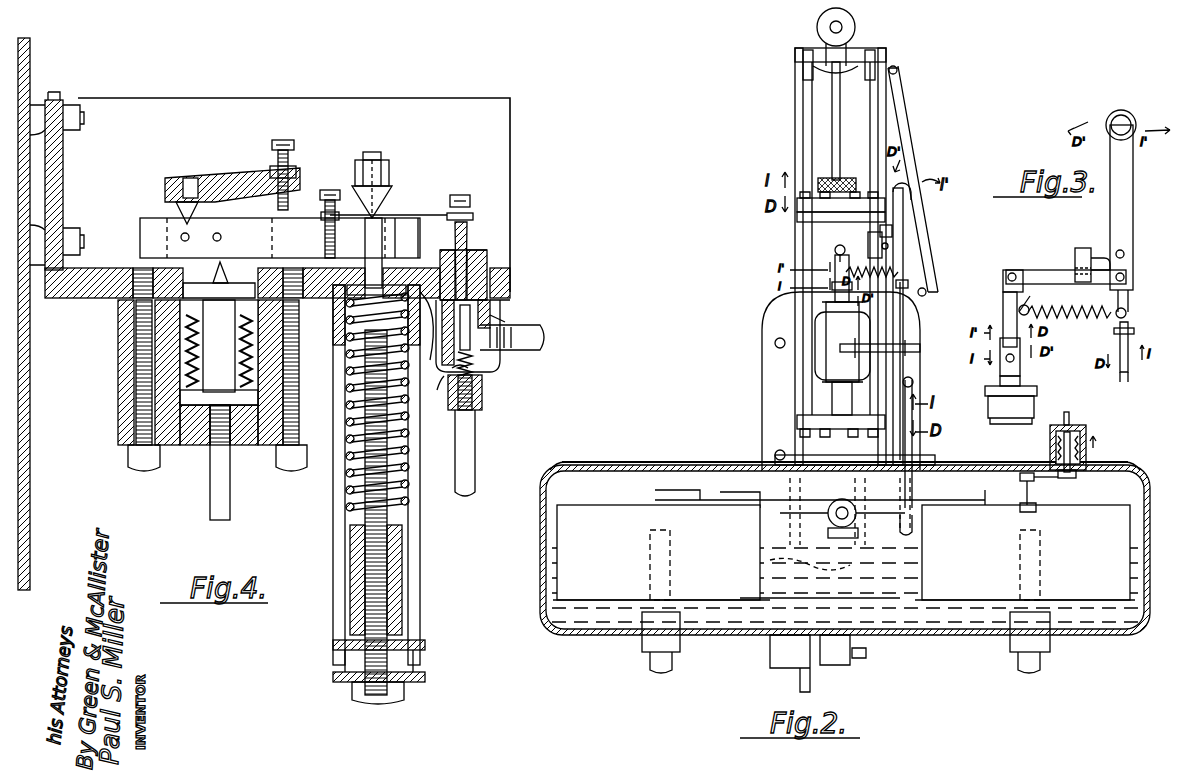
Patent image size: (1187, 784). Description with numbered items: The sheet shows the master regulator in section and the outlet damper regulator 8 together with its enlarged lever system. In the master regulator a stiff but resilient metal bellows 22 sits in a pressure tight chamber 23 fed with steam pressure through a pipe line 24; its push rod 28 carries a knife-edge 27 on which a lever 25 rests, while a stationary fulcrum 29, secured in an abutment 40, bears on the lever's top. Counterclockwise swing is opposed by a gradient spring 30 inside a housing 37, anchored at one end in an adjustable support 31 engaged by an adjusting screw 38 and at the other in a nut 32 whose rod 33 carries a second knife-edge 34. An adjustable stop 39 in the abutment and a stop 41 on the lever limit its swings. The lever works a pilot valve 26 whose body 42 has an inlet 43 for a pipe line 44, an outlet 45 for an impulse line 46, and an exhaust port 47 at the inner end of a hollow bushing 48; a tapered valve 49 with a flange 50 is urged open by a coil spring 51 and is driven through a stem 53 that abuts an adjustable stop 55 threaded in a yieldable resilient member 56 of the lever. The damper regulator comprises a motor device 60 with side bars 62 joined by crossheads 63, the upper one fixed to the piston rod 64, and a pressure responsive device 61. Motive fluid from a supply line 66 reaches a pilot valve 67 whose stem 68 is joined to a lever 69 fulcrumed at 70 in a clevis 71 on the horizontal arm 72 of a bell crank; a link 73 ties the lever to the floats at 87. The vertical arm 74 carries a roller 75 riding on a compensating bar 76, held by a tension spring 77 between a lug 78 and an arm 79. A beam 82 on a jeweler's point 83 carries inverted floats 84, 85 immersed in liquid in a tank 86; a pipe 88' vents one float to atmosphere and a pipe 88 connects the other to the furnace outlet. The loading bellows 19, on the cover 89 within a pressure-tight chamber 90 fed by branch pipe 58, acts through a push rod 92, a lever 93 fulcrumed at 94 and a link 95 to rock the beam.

In FIG. 2, the outlet damper regulator 8 is at (690, 331).
In FIG. 2, the loading bellows 19 is at (1087, 452).
In FIG. 4, the metal bellows 22 is at (190, 340).
In FIG. 4, the pressure tight chamber 23 is at (186, 362).
In FIG. 4, the pipe line 24 is at (225, 492).
In FIG. 4, the lever 25 is at (280, 238).
In FIG. 4, the pilot valve 26 is at (580, 367).
In FIG. 4, the knife-edge 27 is at (215, 265).
In FIG. 4, the push rod 28 is at (228, 352).
In FIG. 4, the stationary fulcrum 29 is at (180, 212).
In FIG. 4, the gradient spring 30 is at (403, 514).
In FIG. 4, the adjustable support 31 is at (355, 575).
In FIG. 4, the nut 32 is at (440, 345).
In FIG. 4, the rod 33 is at (383, 212).
In FIG. 4, the knife-edge 34 is at (380, 198).
In FIG. 4, the housing 37 is at (418, 546).
In FIG. 4, the adjusting screw 38 is at (368, 646).
In FIG. 4, the adjustable stop 39 is at (286, 141).
In FIG. 4, the abutment 40 is at (237, 178).
In FIG. 4, the adjustable stop 41 is at (334, 190).
In FIG. 4, the valve body 42 is at (468, 332).
In FIG. 4, the inlet 43 is at (482, 396).
In FIG. 4, the pipe line 44 is at (472, 434).
In FIG. 4, the outlet 45 is at (486, 366).
In FIG. 4, the impulse line 46 is at (530, 340).
In FIG. 4, the exhaust port 47 is at (482, 302).
In FIG. 4, the hollow bushing 48 is at (476, 258).
In FIG. 4, the valve 49 is at (490, 314).
In FIG. 4, the circumferential flange 50 is at (446, 380).
In FIG. 4, the coil spring 51 is at (482, 372).
In FIG. 4, the stem 53 is at (466, 250).
In FIG. 4, the adjustable stop 55 is at (464, 195).
In FIG. 4, the yieldable resilient member 56 is at (473, 214).
In FIG. 2, the branch pipe 58 is at (1070, 420).
In FIG. 2, the motor device 60 is at (778, 255).
In FIG. 2, the pressure responsive device 61 is at (703, 455).
In FIG. 2, the side bars 62 is at (795, 127).
In FIG. 2, the crossheads 63 is at (858, 60).
In FIG. 2, the piston rod 64 is at (836, 148).
In FIG. 2, the supply line 66 is at (922, 340).
In FIG. 2, the pilot valve 67 is at (832, 342).
In FIG. 3, the pilot valve 67 is at (1037, 398).
In FIG. 2, the stem 68 is at (835, 283).
In FIG. 3, the stem 68 is at (1020, 372).
In FIG. 2, the lever 69 is at (845, 252).
In FIG. 3, the lever 69 is at (1043, 274).
In FIG. 3, the fulcrum 70 is at (1090, 284).
In FIG. 2, the clevis 71 is at (868, 240).
In FIG. 3, the clevis 71 is at (1078, 254).
In FIG. 2, the horizontal arm 72 is at (890, 238).
In FIG. 3, the horizontal arm 72 is at (1100, 256).
In FIG. 2, the link 73 is at (903, 310).
In FIG. 3, the link 73 is at (1128, 294).
In FIG. 2, the vertical arm 74 is at (905, 210).
In FIG. 3, the vertical arm 74 is at (1133, 210).
In FIG. 2, the roller 75 is at (904, 182).
In FIG. 3, the roller 75 is at (1132, 118).
In FIG. 2, the compensating bar 76 is at (906, 128).
In FIG. 2, the tension spring 77 is at (836, 262).
In FIG. 3, the tension spring 77 is at (1077, 316).
In FIG. 3, the lug 78 is at (1018, 306).
In FIG. 2, the arm 79 is at (905, 270).
In FIG. 3, the arm 79 is at (1128, 314).
In FIG. 2, the beam 82 is at (795, 506).
In FIG. 2, the jeweler's point 83 is at (836, 518).
In FIG. 2, the float 84 is at (1095, 561).
In FIG. 2, the float 85 is at (620, 563).
In FIG. 2, the tank 86 is at (542, 594).
In FIG. 2, the connection 87 is at (896, 456).
In FIG. 2, the pipe 88 is at (1046, 642).
In FIG. 2, the pipe 88' is at (676, 643).
In FIG. 2, the cover 89 is at (645, 463).
In FIG. 2, the pressure-tight chamber 90 is at (1050, 440).
In FIG. 2, the push rod 92 is at (1052, 458).
In FIG. 2, the lever 93 is at (1050, 480).
In FIG. 2, the fulcrum 94 is at (1078, 477).
In FIG. 2, the link 95 is at (1020, 488).